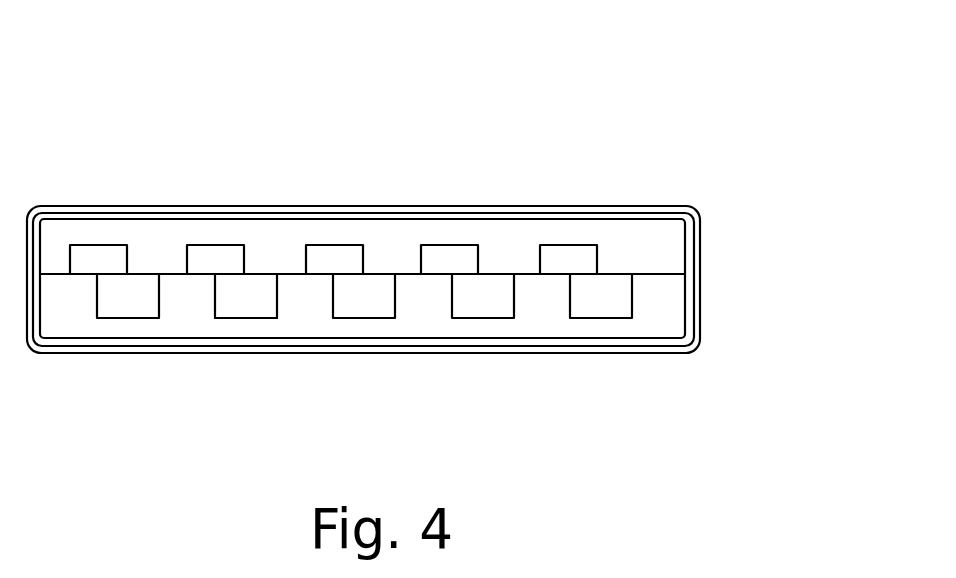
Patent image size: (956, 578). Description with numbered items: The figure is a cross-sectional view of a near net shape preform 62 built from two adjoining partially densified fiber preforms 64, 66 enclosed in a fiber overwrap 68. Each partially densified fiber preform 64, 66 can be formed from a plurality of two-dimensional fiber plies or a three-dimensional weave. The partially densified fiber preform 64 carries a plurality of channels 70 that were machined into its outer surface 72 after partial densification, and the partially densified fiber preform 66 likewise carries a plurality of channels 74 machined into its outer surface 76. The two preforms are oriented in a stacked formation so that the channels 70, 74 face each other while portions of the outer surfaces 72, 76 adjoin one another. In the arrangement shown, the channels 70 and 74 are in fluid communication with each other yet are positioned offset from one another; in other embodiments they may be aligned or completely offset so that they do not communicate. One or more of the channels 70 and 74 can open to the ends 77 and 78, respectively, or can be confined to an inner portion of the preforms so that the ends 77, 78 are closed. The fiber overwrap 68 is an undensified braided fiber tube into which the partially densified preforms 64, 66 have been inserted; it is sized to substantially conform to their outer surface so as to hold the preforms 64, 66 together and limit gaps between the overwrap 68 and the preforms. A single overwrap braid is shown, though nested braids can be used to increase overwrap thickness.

The near net shape preform 62 is at (754, 109).
The partially densified fiber preform 64 is at (403, 256).
The partially densified fiber preform 66 is at (317, 319).
The fiber overwrap 68 is at (673, 356).
The channels 70 is at (579, 255).
The outer surface 72 is at (255, 275).
The channels 74 is at (372, 303).
The outer surface 76 is at (85, 274).
The end 77 is at (650, 243).
The end 78 is at (650, 308).